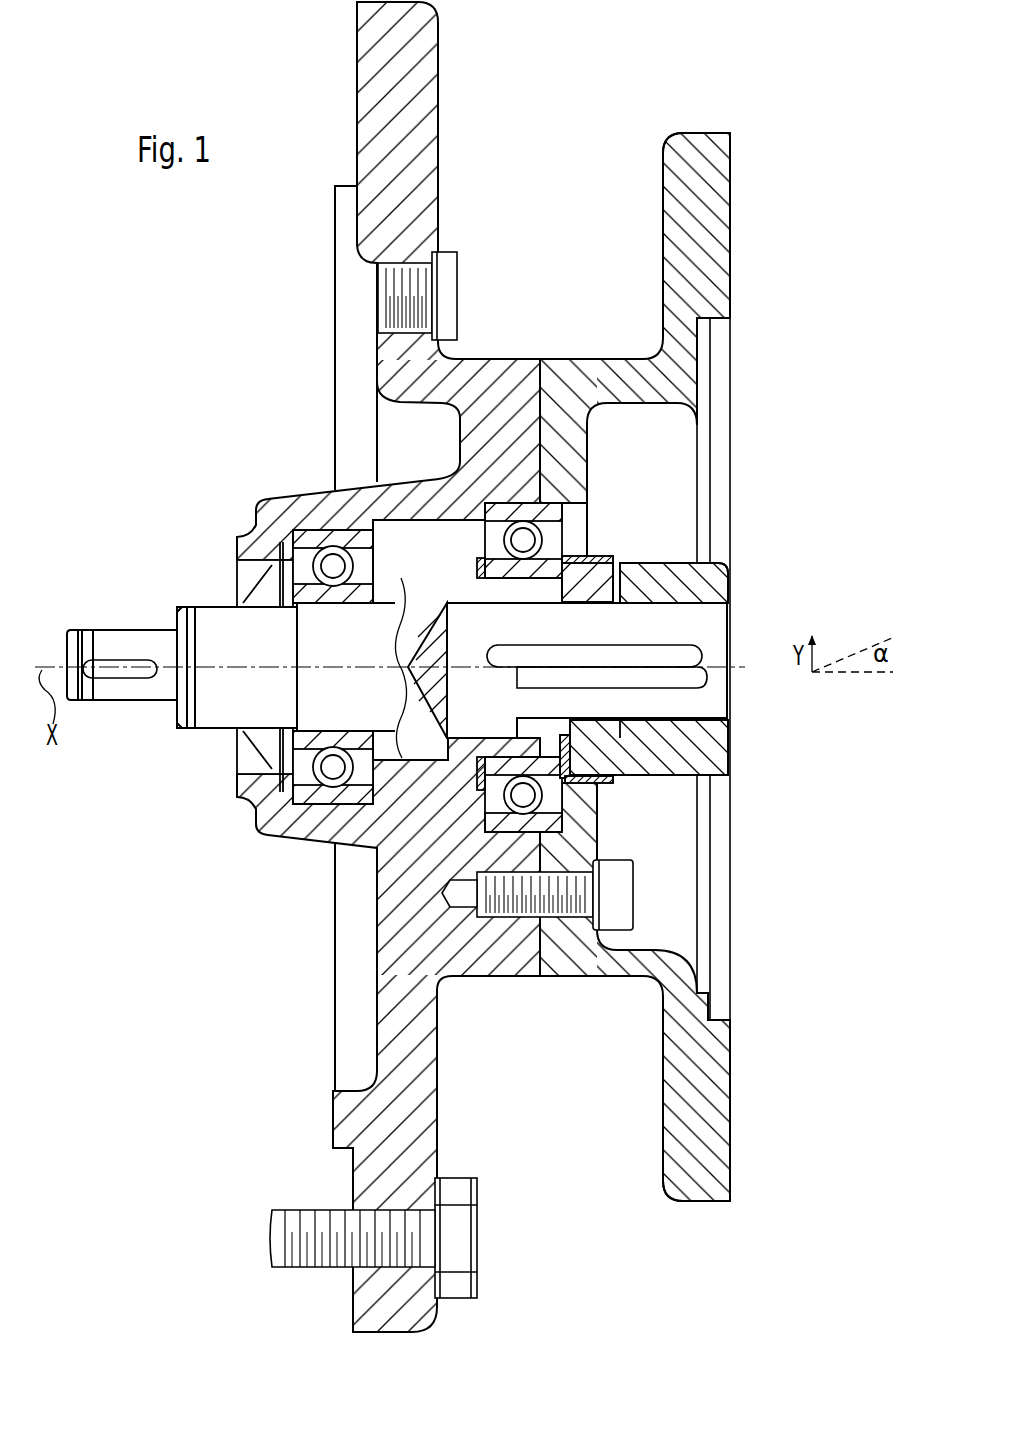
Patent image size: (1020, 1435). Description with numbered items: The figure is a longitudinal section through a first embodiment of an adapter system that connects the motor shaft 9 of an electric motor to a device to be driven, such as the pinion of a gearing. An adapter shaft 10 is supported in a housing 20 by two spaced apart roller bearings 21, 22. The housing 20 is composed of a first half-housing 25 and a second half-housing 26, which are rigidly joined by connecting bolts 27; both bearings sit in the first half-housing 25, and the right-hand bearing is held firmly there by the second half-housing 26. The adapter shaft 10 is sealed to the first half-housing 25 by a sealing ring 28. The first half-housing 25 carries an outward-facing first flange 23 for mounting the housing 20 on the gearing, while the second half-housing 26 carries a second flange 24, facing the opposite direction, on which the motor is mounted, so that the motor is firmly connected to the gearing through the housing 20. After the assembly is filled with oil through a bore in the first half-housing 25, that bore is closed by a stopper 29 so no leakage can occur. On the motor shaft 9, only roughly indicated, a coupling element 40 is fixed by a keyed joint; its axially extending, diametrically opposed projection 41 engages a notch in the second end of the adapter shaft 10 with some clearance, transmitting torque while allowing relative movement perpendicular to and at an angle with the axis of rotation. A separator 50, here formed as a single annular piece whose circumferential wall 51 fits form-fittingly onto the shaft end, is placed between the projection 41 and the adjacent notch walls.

The motor shaft 9 is at (722, 632).
The adapter shaft 10 is at (180, 736).
The housing 20 is at (551, 184).
The roller bearing 21 is at (330, 534).
The roller bearing 22 is at (562, 513).
The first flange 23 is at (345, 157).
The second flange 24 is at (734, 268).
The first half-housing 25 is at (365, 40).
The second half-housing 26 is at (722, 186).
The connecting bolts 27 is at (627, 908).
The sealing ring 28 is at (240, 758).
The stopper 29 is at (452, 300).
The coupling element 40 is at (721, 582).
The projection 41 is at (598, 757).
The separator 50 is at (593, 801).
The circumferential wall 51 is at (596, 780).